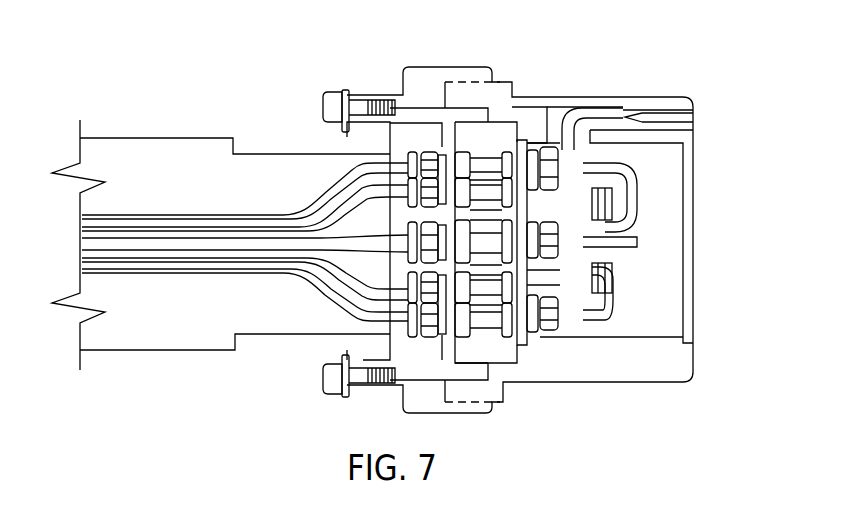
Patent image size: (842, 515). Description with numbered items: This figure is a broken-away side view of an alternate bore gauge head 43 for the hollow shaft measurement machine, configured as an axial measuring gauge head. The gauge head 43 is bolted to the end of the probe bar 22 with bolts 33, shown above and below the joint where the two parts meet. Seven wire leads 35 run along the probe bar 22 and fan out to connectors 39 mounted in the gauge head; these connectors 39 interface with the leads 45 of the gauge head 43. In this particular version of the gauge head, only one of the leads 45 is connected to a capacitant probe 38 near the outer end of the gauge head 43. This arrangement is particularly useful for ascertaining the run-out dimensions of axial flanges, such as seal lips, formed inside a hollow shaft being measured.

The probe bar 22 is at (138, 138).
The bolts 33 is at (335, 104).
The wire leads 35 is at (117, 268).
The capacitant probe 38 is at (658, 118).
The connectors 39 is at (483, 163).
The bore gauge head 43 is at (568, 78).
The leads 45 is at (635, 202).